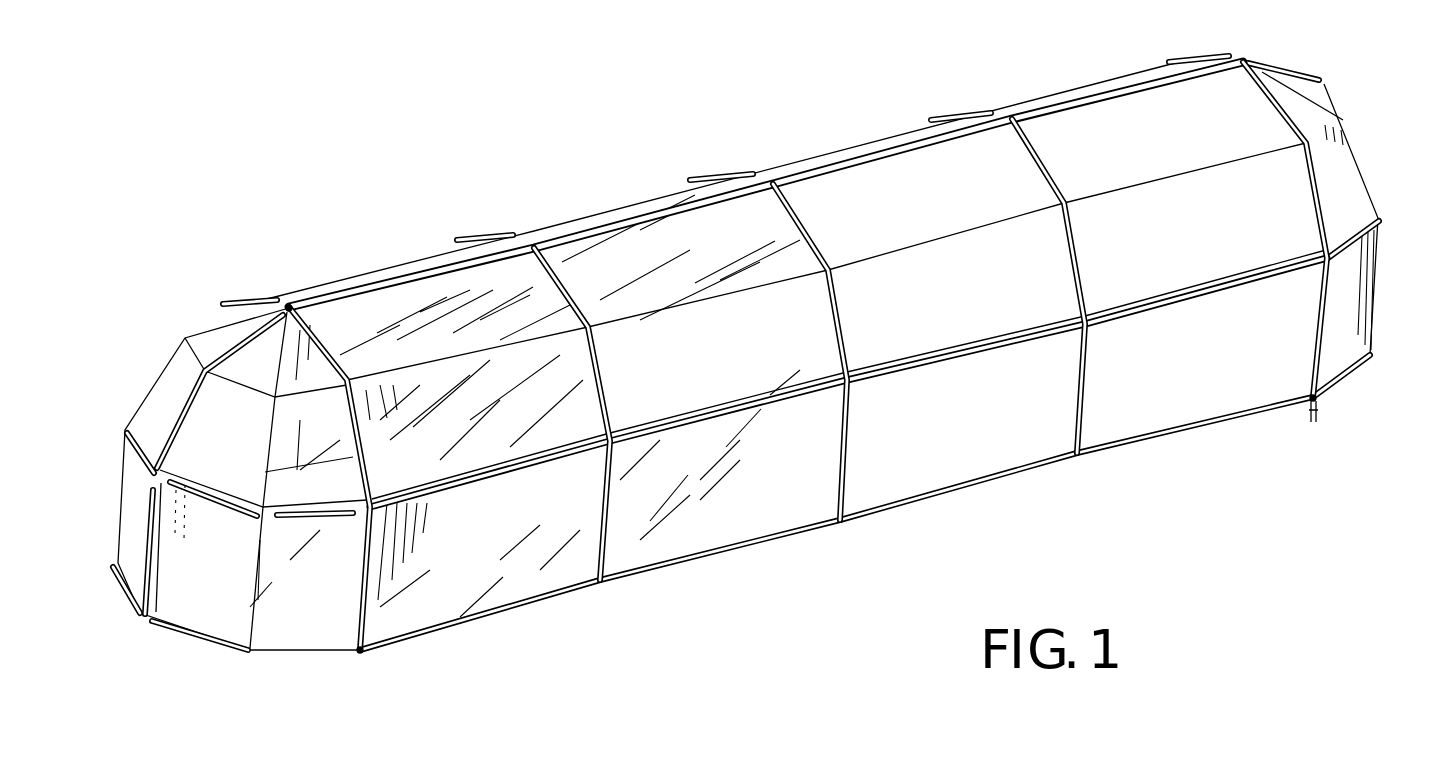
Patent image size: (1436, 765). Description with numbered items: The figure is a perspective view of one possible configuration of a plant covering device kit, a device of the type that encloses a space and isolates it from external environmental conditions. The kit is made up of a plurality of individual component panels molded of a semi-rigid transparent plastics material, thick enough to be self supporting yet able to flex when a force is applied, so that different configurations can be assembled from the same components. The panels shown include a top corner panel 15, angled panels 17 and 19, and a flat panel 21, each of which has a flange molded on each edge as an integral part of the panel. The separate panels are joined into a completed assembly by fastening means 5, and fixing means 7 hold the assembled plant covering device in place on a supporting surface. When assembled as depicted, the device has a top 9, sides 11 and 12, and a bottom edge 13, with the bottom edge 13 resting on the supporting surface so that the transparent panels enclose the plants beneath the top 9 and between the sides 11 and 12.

The fastening means 5 is at (485, 238).
The fixing means 7 is at (291, 304).
The top 9 is at (861, 160).
The side 11 is at (150, 528).
The side 12 is at (1356, 143).
The bottom edge 13 is at (783, 540).
The top corner panel 15 is at (253, 361).
The angled panel 17 is at (214, 591).
The angled panel 19 is at (1125, 134).
The flat panel 21 is at (497, 568).